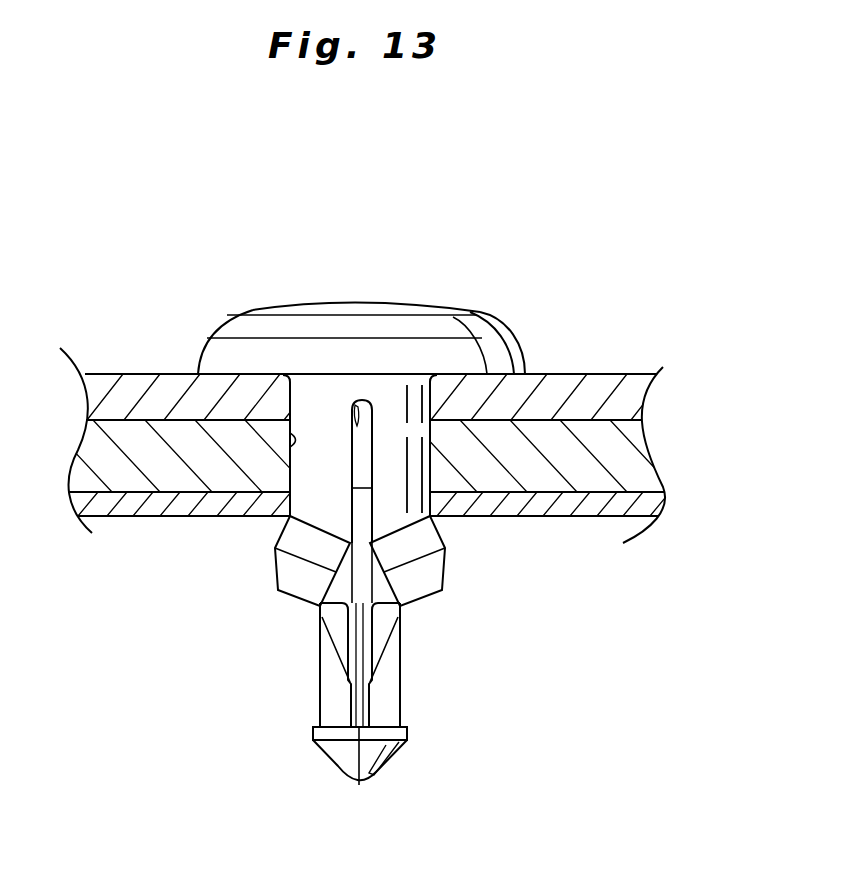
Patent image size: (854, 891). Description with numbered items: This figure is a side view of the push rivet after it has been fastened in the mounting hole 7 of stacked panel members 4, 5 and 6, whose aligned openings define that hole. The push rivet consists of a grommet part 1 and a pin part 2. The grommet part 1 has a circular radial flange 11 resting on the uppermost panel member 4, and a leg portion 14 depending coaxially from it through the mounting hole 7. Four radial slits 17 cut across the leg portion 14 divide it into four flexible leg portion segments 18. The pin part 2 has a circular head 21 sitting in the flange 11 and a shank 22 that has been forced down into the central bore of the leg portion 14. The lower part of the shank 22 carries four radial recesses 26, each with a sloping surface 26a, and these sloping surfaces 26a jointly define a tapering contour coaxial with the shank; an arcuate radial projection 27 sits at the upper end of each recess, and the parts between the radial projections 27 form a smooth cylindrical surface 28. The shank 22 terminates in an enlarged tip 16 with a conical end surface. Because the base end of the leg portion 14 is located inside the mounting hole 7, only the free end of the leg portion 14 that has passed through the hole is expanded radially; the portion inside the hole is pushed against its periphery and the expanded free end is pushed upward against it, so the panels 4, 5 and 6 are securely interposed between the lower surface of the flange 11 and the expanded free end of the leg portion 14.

The grommet part 1 is at (380, 410).
The pin part 2 is at (365, 546).
The panel member 4 is at (610, 383).
The panel member 5 is at (640, 452).
The panel member 6 is at (652, 507).
The mounting hole 7 is at (292, 448).
The flange 11 is at (227, 355).
The leg portion 14 is at (432, 472).
The enlarged tip 16 is at (387, 767).
The slit 17 is at (355, 400).
The leg portion segment 18 is at (283, 533).
The head 21 is at (397, 303).
The shank 22 is at (362, 558).
The radial recess 26 is at (347, 707).
The sloping surface 26a is at (347, 648).
The radial projection 27 is at (322, 618).
The cylindrical surface 28 is at (357, 787).